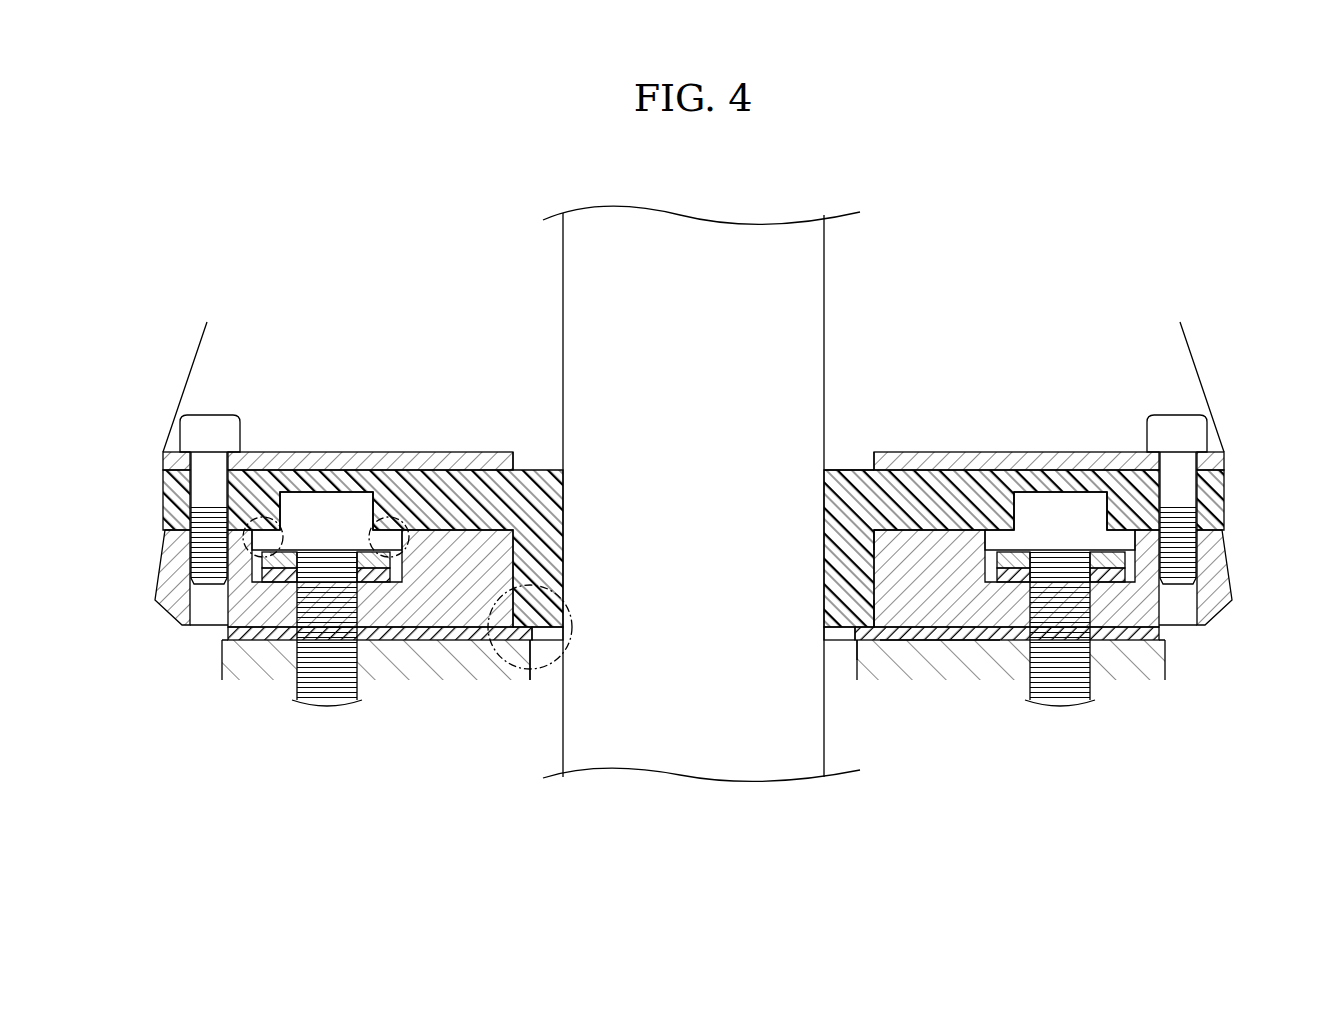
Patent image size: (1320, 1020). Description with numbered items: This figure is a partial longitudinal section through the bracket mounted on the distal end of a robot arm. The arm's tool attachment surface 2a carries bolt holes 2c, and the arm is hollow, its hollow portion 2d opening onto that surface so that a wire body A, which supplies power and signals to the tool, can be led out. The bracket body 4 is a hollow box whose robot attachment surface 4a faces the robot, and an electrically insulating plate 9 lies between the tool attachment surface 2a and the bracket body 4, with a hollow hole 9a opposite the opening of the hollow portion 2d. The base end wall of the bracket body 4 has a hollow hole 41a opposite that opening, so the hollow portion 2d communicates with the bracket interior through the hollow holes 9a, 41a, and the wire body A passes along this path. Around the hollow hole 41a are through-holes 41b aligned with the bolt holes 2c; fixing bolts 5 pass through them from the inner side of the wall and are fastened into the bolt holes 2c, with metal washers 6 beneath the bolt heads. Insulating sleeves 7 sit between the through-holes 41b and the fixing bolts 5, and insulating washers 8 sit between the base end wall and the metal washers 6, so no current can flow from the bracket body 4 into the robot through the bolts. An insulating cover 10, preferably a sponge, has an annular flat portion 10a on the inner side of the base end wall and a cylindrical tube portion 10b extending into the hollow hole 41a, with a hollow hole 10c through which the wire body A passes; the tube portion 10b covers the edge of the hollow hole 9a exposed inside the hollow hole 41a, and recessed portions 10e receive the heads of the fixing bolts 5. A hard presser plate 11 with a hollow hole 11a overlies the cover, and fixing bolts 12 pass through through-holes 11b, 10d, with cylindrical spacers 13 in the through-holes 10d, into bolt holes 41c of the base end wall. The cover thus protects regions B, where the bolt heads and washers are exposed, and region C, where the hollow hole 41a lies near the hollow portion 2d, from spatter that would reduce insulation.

The wire body A is at (826, 290).
The region B is at (266, 517).
The region C is at (574, 622).
The tool attachment surface 2a is at (470, 640).
The bolt hole 2c is at (350, 655).
The hollow portion 2d is at (530, 645).
The bracket body 4 is at (1195, 565).
The robot attachment surface 4a is at (945, 640).
The fixing bolt 5 is at (338, 507).
The metal washer 6 is at (393, 557).
The insulating sleeve 7 is at (296, 607).
The insulating washer 8 is at (387, 583).
The insulating plate 9 is at (224, 632).
The hollow hole 9a is at (547, 640).
The insulating cover 10 is at (906, 480).
The flat portion 10a is at (893, 548).
The tube portion 10b is at (883, 640).
The hollow hole 10c is at (826, 512).
The through-hole 10d is at (192, 498).
The recessed portion 10e is at (306, 497).
The presser plate 11 is at (1005, 452).
The hollow hole 11a is at (512, 462).
The through-hole 11b is at (196, 460).
The fixing bolt 12 is at (210, 415).
The spacer 13 is at (195, 516).
The hollow hole 41a is at (882, 620).
The through-hole 41b is at (300, 612).
The bolt hole 41c is at (198, 586).